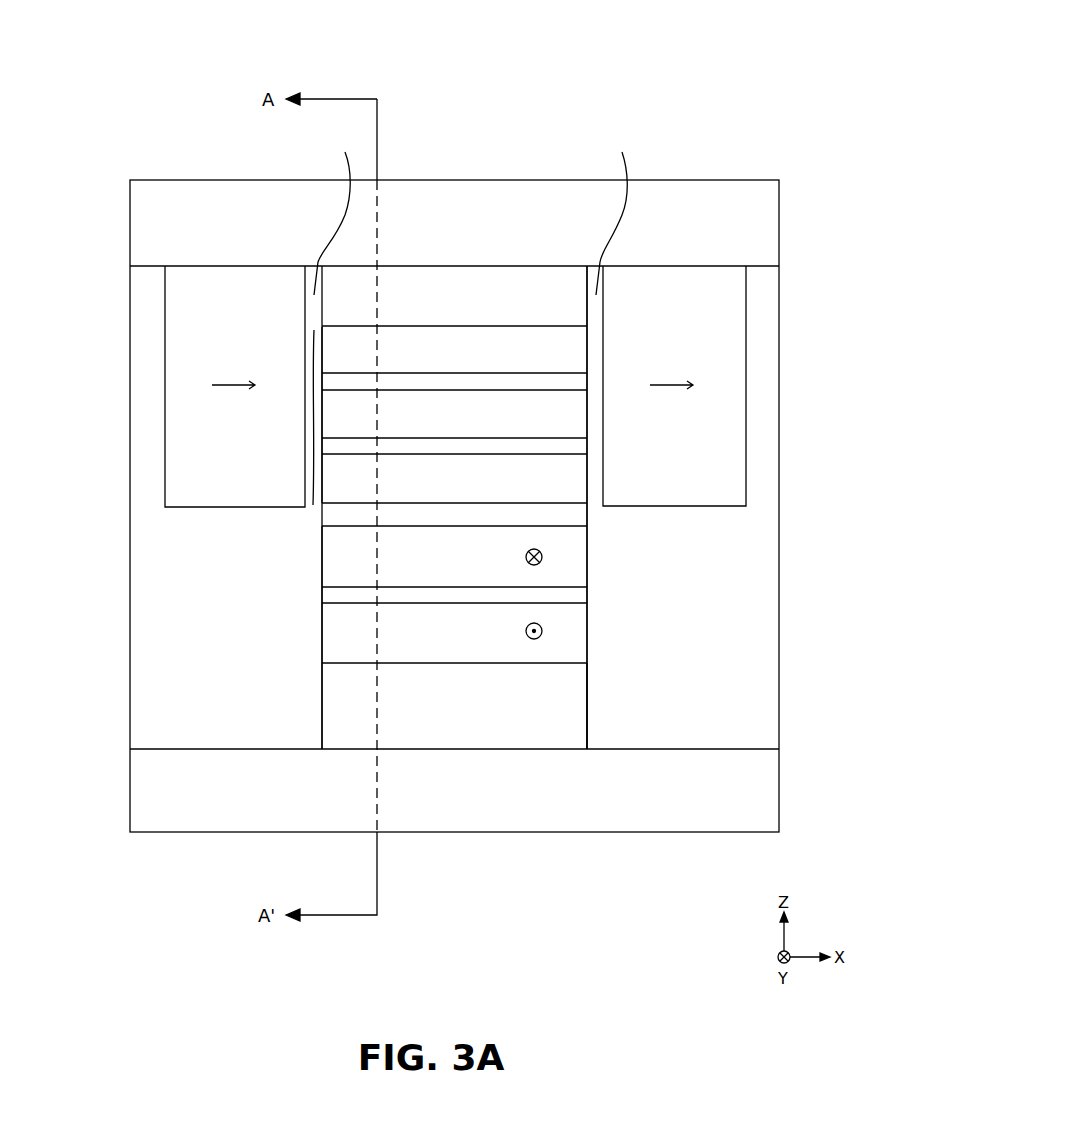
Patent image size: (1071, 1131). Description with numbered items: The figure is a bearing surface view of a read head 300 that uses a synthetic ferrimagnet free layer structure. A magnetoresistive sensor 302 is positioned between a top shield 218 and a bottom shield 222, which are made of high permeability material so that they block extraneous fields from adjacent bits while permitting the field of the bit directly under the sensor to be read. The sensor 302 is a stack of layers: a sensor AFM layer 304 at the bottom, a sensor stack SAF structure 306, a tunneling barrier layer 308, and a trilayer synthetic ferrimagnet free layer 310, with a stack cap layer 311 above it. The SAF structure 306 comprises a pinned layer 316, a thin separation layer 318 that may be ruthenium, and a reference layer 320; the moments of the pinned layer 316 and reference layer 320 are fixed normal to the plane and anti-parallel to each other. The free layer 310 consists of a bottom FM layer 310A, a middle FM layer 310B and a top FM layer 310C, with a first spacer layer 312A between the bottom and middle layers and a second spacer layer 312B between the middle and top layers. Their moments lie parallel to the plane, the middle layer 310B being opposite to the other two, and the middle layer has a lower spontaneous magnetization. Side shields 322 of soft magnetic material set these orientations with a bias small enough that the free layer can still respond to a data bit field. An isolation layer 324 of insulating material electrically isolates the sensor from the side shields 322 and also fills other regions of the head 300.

The read head 300 is at (752, 72).
The magnetoresistive sensor 302 is at (682, 562).
The sensor AFM layer 304 is at (488, 712).
The sensor stack SAF structure 306 is at (590, 526).
The tunneling barrier layer 308 is at (575, 513).
The trilayer synthetic ferrimagnet free layer 310 is at (315, 413).
The bottom FM layer 310A is at (398, 478).
The middle FM layer 310B is at (406, 419).
The top FM layer 310C is at (398, 353).
The stack cap layer 311 is at (488, 305).
The first spacer layer 312A is at (571, 447).
The second spacer layer 312B is at (571, 383).
The pinned layer 316 is at (488, 642).
The thin separation layer 318 is at (341, 596).
The reference layer 320 is at (488, 566).
The side shields 322 is at (253, 329).
The isolation layer 324 is at (818, 716).
The top shield 218 is at (398, 224).
The bottom shield 222 is at (398, 786).